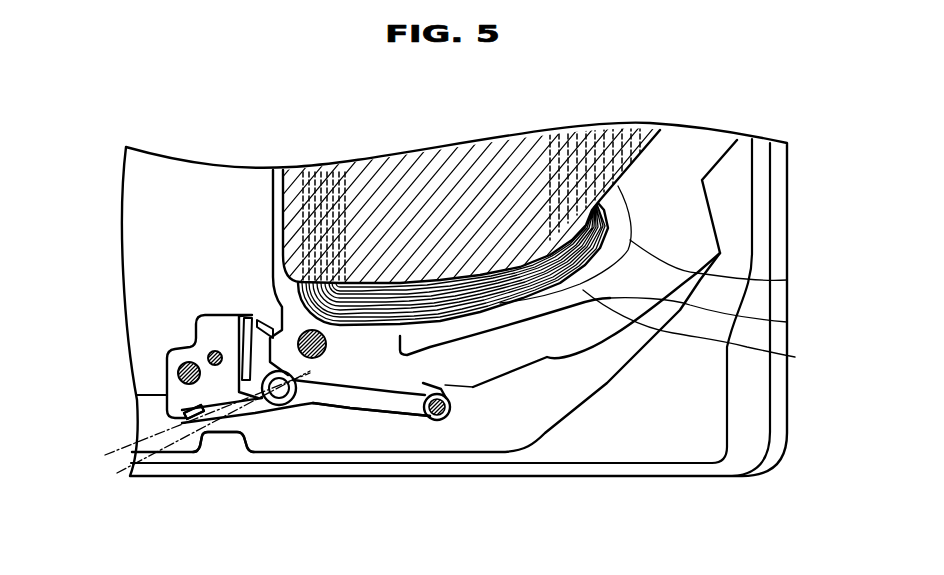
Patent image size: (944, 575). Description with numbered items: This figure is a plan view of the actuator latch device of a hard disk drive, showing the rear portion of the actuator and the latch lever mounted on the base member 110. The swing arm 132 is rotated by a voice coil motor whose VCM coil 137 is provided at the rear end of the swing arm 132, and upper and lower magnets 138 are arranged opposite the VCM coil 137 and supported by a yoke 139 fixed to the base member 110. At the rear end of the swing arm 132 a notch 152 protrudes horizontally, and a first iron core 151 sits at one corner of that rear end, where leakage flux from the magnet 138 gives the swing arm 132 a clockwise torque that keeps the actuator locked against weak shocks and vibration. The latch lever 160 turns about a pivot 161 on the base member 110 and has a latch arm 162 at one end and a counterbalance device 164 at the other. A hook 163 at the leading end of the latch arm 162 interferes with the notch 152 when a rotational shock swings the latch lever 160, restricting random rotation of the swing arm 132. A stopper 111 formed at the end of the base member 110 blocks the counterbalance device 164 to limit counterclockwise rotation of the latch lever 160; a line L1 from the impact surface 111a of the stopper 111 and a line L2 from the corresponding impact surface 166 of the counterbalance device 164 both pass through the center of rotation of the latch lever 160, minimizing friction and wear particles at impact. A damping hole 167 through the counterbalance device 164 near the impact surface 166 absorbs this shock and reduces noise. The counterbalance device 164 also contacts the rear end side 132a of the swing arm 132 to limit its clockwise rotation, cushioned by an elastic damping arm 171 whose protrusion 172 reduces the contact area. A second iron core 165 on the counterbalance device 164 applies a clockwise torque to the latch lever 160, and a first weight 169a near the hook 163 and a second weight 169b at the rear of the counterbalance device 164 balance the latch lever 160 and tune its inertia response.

The base member 110 is at (787, 402).
The stopper 111 is at (218, 448).
The impact surface 111a is at (202, 435).
The swing arm 132 is at (787, 280).
The rear end side 132a is at (275, 307).
The VCM coil 137 is at (795, 357).
The magnet 138 is at (652, 152).
The yoke 139 is at (787, 322).
The first iron core 151 is at (318, 332).
The notch 152 is at (381, 372).
The latch lever 160 is at (298, 425).
The pivot 161 is at (279, 406).
The latch arm 162 is at (403, 412).
The hook 163 is at (473, 387).
The counterbalance device 164 is at (203, 322).
The second iron core 165 is at (209, 353).
The impact surface 166 is at (187, 418).
The damping hole 167 is at (183, 411).
The first weight 169a is at (437, 421).
The second weight 169b is at (178, 373).
The damping arm 171 is at (262, 343).
The protrusion 172 is at (256, 320).
The line L1 is at (121, 473).
The line L2 is at (100, 456).